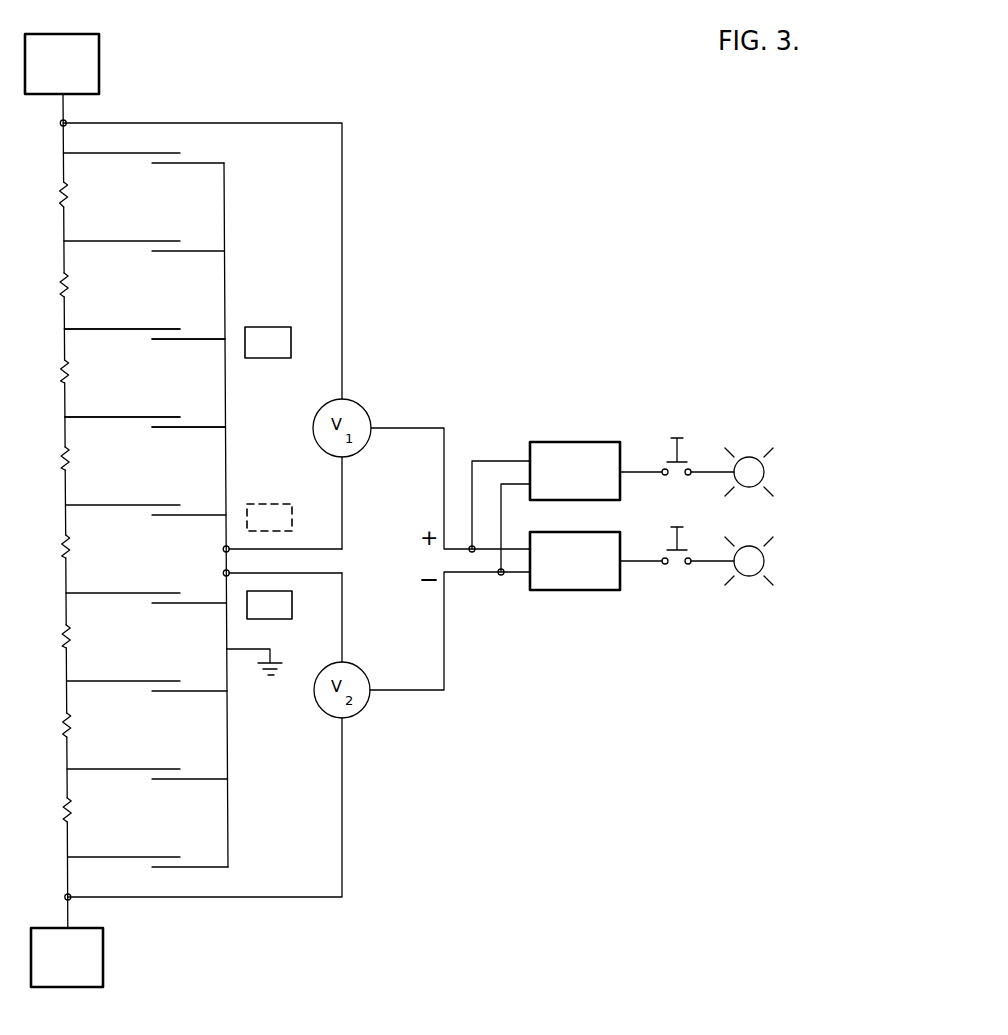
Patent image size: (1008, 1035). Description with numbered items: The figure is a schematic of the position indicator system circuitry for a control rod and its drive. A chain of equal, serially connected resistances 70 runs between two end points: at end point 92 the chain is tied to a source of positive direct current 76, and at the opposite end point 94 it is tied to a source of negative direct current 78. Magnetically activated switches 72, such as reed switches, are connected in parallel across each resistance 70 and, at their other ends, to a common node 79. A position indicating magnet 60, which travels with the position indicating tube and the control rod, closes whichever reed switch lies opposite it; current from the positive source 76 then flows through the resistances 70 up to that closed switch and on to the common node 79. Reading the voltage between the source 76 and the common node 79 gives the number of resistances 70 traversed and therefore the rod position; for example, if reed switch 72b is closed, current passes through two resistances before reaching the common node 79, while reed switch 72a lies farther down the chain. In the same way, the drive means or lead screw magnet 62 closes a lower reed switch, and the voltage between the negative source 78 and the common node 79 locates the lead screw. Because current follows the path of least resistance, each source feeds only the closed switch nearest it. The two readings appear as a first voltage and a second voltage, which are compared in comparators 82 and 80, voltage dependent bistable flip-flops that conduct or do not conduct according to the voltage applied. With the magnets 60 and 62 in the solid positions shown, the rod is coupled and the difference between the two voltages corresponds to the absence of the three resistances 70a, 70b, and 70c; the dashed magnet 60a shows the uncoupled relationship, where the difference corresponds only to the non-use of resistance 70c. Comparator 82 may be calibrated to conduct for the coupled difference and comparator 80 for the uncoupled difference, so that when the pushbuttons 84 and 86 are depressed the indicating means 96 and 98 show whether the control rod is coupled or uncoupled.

The source of positive direct current 76 is at (65, 34).
The source of negative direct current 78 is at (58, 987).
The end point 92 is at (60, 123).
The opposite end point 94 is at (64, 897).
The resistances 70 is at (60, 196).
The resistance 70a is at (69, 374).
The resistance 70b is at (69, 459).
The resistance 70c is at (69, 547).
The magnetically activated switches 72 is at (205, 427).
The reed switch 72a is at (127, 417).
The reed switch 72b is at (135, 329).
The position indicating magnet 60 is at (276, 327).
The dashed magnet 60a is at (262, 504).
The drive means magnet 62 is at (292, 619).
The common node 79 is at (254, 678).
The comparator 82 is at (576, 442).
The comparator 80 is at (555, 590).
The pushbutton 84 is at (676, 440).
The pushbutton 86 is at (677, 526).
The indicating means 96 is at (765, 472).
The indicating means 98 is at (764, 567).